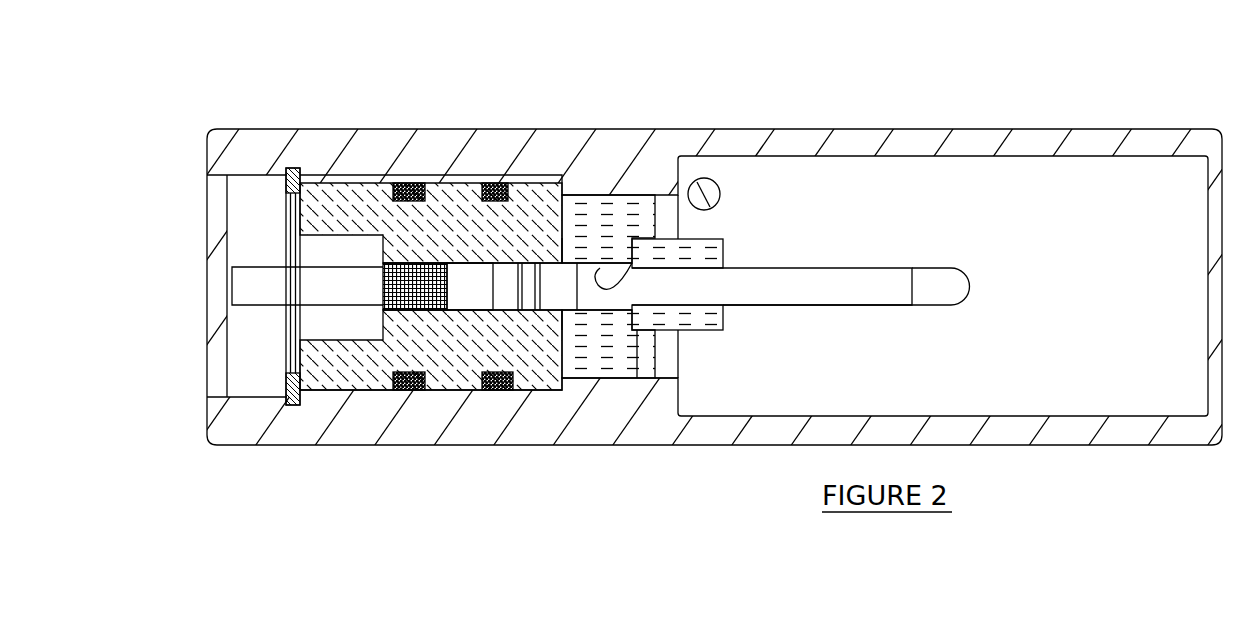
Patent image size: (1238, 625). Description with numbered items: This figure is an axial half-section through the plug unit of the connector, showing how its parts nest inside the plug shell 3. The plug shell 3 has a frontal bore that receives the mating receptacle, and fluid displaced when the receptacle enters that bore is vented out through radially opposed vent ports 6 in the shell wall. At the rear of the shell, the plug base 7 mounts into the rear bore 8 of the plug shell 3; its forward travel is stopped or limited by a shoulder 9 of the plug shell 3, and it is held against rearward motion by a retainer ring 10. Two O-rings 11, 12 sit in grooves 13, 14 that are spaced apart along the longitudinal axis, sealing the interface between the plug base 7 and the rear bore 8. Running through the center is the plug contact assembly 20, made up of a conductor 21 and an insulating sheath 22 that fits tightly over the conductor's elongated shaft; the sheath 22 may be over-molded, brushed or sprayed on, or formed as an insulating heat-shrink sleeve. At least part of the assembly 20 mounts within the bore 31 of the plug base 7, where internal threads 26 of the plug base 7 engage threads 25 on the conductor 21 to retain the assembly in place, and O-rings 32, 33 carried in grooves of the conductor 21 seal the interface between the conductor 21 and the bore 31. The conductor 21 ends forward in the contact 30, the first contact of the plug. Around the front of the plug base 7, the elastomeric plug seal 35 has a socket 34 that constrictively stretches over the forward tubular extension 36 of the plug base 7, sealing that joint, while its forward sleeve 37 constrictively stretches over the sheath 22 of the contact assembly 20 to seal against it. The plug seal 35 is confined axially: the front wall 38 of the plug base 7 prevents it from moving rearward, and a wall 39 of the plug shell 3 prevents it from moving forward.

The plug shell 3 is at (1078, 431).
The vent ports 6 is at (712, 191).
The plug base 7 is at (372, 358).
The rear bore 8 is at (460, 215).
The shoulder 9 is at (533, 205).
The retainer ring 10 is at (287, 182).
The O-ring 11 is at (425, 392).
The O-ring 12 is at (513, 392).
The groove 13 is at (510, 198).
The groove 14 is at (400, 232).
The plug contact assembly 20 is at (820, 256).
The conductor 21 is at (433, 232).
The insulating sheath 22 is at (850, 297).
The threads 25 is at (382, 285).
The internal threads 26 is at (407, 310).
The contact 30 is at (930, 277).
The bore 31 is at (640, 278).
The O-ring 32 is at (590, 312).
The O-ring 33 is at (560, 345).
The socket 34 is at (632, 270).
The elastomeric plug seal 35 is at (615, 355).
The forward tubular extension 36 is at (637, 330).
The forward sleeve 37 is at (700, 315).
The front wall 38 is at (593, 218).
The wall 39 is at (670, 335).